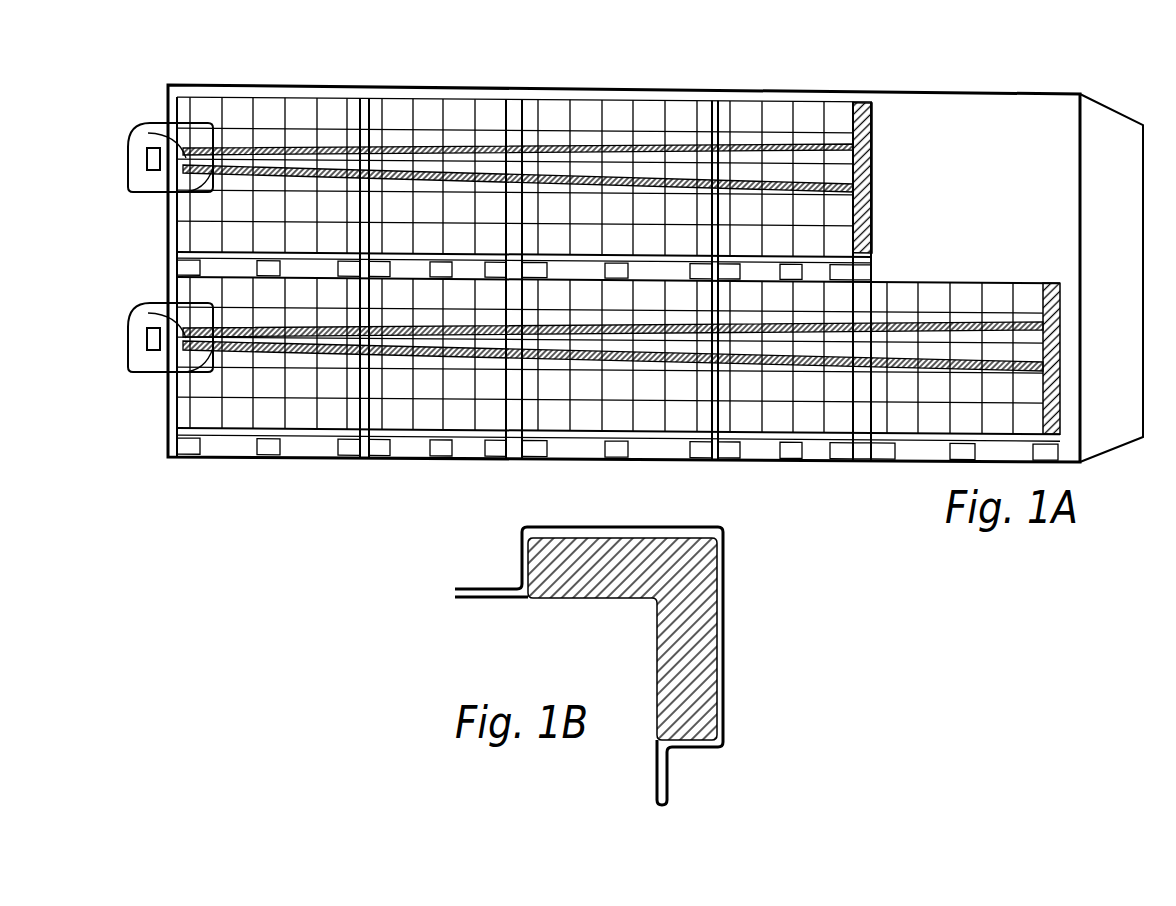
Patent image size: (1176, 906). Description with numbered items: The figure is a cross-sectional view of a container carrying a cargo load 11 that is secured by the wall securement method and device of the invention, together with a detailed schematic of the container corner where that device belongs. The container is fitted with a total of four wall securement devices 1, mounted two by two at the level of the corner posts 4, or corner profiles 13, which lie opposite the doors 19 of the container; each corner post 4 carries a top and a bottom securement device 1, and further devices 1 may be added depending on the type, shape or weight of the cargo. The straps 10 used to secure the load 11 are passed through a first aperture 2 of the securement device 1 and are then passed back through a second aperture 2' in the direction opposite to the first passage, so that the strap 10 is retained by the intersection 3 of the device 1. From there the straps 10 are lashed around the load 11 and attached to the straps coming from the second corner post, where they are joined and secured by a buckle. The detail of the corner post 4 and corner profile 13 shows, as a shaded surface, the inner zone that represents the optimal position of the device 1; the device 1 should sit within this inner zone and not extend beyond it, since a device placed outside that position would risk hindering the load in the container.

In FIG. 1A, the wall securement device 1 is at (140, 114).
In FIG. 1A, the first aperture 2 is at (149, 272).
In FIG. 1A, the second aperture 2' is at (135, 227).
In FIG. 1A, the intersection 3 is at (146, 158).
In FIG. 1A, the corner post 4 is at (167, 438).
In FIG. 1A, the strap 10 is at (424, 150).
In FIG. 1A, the cargo load 11 is at (271, 113).
In FIG. 1B, the corner profile 13 is at (728, 632).
In FIG. 1A, the doors 19 is at (1127, 153).